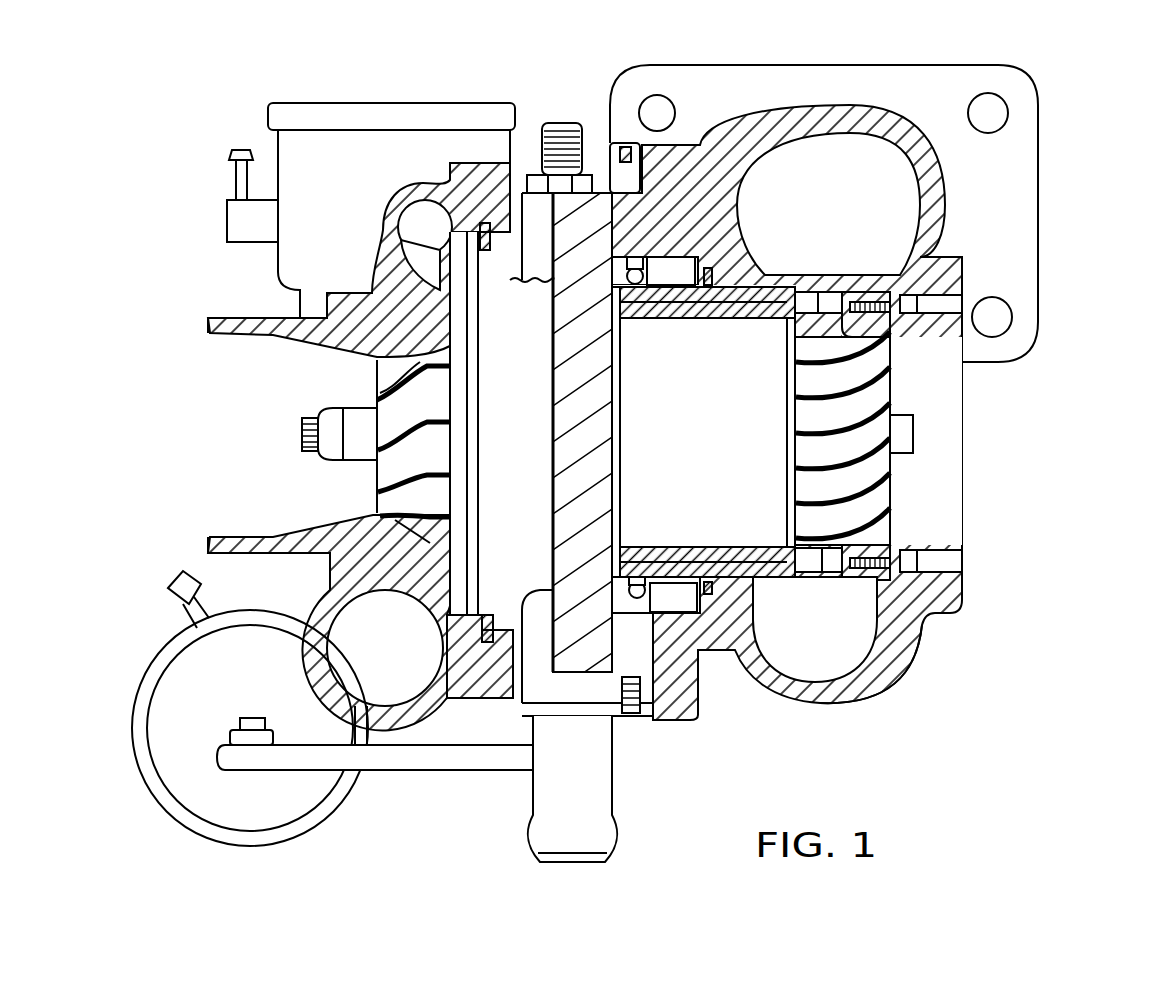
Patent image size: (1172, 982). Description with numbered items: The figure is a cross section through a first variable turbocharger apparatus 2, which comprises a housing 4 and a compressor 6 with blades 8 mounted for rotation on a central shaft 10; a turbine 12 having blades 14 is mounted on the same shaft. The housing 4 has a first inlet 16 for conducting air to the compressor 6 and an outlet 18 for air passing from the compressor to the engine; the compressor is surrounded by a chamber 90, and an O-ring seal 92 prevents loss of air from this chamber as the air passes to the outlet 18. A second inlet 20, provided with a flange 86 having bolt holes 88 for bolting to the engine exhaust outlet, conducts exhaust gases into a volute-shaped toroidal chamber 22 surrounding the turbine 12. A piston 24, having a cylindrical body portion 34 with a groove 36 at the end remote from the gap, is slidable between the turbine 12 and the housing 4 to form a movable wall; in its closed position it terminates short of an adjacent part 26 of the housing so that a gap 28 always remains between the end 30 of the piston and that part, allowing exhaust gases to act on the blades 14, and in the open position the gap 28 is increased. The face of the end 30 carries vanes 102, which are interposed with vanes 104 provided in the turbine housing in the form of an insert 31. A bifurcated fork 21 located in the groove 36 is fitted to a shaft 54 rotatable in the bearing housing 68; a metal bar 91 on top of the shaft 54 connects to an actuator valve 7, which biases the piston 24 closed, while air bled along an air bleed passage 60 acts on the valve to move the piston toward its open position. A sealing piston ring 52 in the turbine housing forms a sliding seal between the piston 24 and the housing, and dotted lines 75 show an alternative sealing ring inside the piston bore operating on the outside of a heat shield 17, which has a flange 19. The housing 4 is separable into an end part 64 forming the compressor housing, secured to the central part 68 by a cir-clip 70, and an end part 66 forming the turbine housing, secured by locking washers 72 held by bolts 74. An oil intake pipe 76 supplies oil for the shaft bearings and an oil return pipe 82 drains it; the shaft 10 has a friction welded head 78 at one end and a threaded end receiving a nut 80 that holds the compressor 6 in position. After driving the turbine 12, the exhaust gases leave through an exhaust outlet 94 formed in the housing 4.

The variable turbocharger apparatus 2 is at (1048, 280).
The housing 4 is at (945, 245).
The compressor 6 is at (388, 473).
The actuator valve 7 is at (173, 722).
The blades 8 is at (380, 397).
The central shaft 10 is at (302, 432).
The turbine 12 is at (873, 385).
The blades 14 is at (870, 500).
The first inlet 16 is at (230, 470).
The heat shield 17 is at (650, 422).
The outlet 18 is at (363, 103).
The flange 19 is at (617, 388).
The second inlet 20 is at (1040, 160).
The bifurcated fork 21 is at (647, 278).
The chamber 22 is at (905, 200).
The piston 24 is at (710, 320).
The adjacent part 26 is at (890, 533).
The gap 28 is at (787, 332).
The end 30 is at (790, 578).
The insert 31 is at (850, 568).
The cylindrical body portion 34 is at (737, 565).
The groove 36 is at (640, 305).
The sealing piston ring 52 is at (712, 282).
The shaft 54 is at (640, 268).
The air bleed passage 60 is at (232, 148).
The end part 64 is at (357, 562).
The end part 66 is at (878, 665).
The central part 68 is at (638, 650).
The cir-clip 70 is at (485, 623).
The locking washers 72 is at (636, 143).
The bolts 74 is at (622, 157).
The dotted lines 75 is at (667, 550).
The oil intake pipe 76 is at (552, 128).
The friction welded head 78 is at (915, 440).
The nut 80 is at (317, 455).
The oil return pipe 82 is at (600, 797).
The flange 86 is at (1040, 220).
The bolt holes 88 is at (995, 112).
The chamber 90 is at (395, 675).
The metal bar 91 is at (498, 760).
The O-ring seal 92 is at (463, 252).
The exhaust outlet 94 is at (975, 480).
The vanes 102 is at (805, 562).
The vanes 104 is at (830, 563).